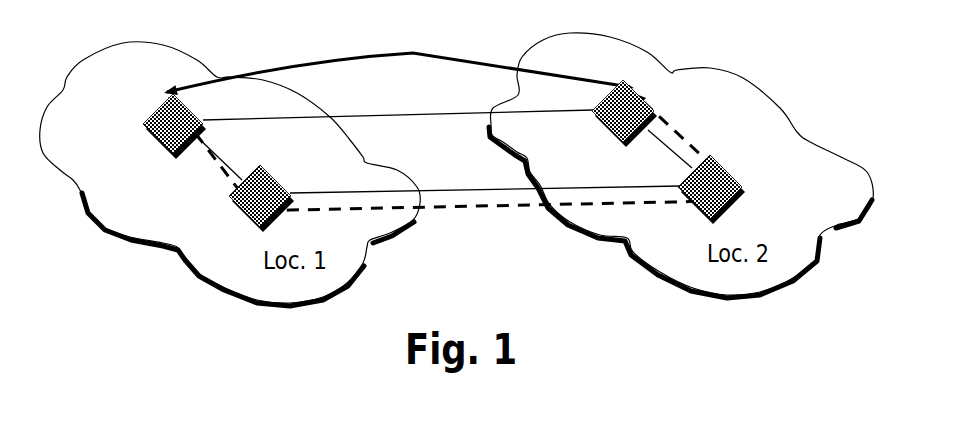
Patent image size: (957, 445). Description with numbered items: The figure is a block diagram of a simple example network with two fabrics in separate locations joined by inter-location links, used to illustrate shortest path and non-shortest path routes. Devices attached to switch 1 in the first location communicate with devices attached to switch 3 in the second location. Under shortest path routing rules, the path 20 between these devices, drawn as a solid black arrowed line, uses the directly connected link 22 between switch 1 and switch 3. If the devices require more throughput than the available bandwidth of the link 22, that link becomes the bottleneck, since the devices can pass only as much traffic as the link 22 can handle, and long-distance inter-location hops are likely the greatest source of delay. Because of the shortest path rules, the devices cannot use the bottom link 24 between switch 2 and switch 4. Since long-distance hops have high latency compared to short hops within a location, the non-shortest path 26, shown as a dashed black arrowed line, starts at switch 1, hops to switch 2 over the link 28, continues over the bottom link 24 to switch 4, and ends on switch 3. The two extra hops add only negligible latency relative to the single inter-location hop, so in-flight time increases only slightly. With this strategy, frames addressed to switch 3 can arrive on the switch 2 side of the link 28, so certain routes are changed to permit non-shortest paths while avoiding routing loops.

The switch 1 is at (174, 126).
The switch 2 is at (261, 198).
The switch 3 is at (624, 113).
The switch 4 is at (711, 189).
The path 20 is at (450, 53).
The link 22 is at (423, 113).
The bottom link 24 is at (427, 190).
The non-shortest path 26 is at (473, 210).
The link 28 is at (217, 156).